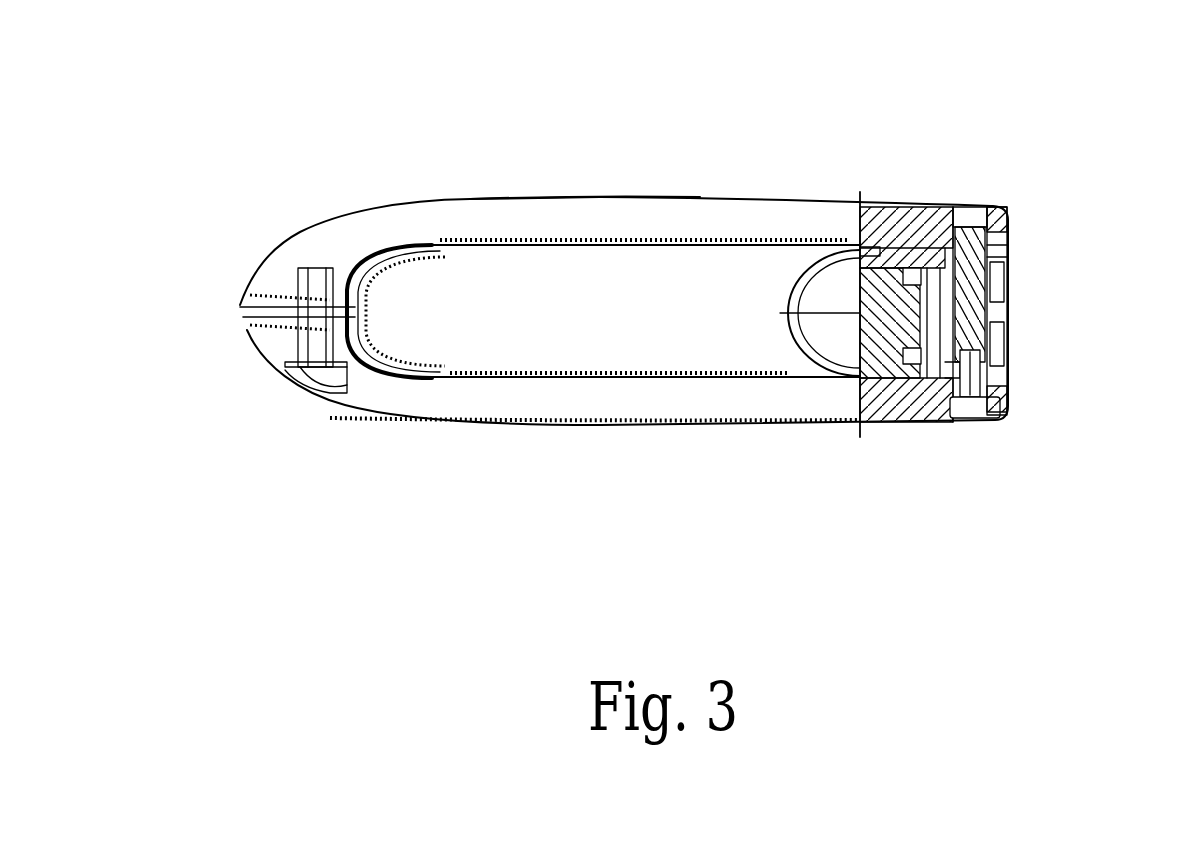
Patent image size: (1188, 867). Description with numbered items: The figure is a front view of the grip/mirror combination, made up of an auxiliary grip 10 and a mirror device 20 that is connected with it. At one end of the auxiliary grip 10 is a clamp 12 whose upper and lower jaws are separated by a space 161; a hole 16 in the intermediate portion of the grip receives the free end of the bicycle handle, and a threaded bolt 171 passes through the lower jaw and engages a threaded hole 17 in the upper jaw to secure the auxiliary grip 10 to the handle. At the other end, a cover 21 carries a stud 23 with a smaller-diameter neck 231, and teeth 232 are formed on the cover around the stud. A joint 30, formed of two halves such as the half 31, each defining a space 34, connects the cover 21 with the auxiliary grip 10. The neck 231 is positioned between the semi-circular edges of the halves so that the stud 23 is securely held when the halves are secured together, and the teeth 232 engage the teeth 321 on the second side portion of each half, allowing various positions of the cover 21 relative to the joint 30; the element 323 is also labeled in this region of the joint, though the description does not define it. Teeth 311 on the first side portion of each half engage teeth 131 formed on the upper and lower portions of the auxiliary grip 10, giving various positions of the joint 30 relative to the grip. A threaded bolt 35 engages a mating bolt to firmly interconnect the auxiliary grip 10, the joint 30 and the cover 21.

The auxiliary grip 10 is at (595, 196).
The clamp 12 is at (280, 247).
The hole 16 is at (427, 246).
The space 161 is at (252, 310).
The threaded hole 17 is at (297, 343).
The threaded bolt 171 is at (283, 381).
The mirror device 20 is at (627, 382).
The cover 21 is at (775, 362).
The stud 23 is at (942, 362).
The neck 231 is at (903, 350).
The teeth 232 is at (860, 247).
The engaging groove 323 is at (897, 280).
The teeth 321 is at (978, 385).
The space 34 is at (976, 232).
The threaded bolt 35 is at (1007, 415).
The joint 30 is at (1016, 337).
The half 31 is at (1002, 257).
The teeth 311 is at (1000, 283).
The teeth 131 is at (1008, 247).